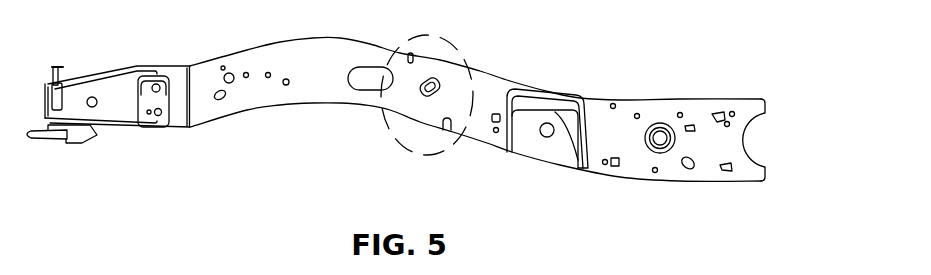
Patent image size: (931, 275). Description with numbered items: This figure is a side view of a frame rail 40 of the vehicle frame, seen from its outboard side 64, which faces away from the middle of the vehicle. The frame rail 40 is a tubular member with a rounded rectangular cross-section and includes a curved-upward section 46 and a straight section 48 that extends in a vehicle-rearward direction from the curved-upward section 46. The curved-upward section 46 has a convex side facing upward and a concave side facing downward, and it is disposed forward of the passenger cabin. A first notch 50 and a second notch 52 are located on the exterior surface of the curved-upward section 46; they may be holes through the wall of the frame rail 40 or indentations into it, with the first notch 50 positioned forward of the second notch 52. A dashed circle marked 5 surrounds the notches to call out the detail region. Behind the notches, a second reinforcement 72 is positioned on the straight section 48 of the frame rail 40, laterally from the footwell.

The frame rail 40 is at (204, 55).
The curved-upward section 46 is at (361, 38).
The straight section 48 is at (693, 99).
The first notch 50 is at (413, 58).
The second notch 52 is at (440, 121).
The detail region 5 is at (390, 132).
The outboard side 64 is at (313, 104).
The second reinforcement 72 is at (547, 104).